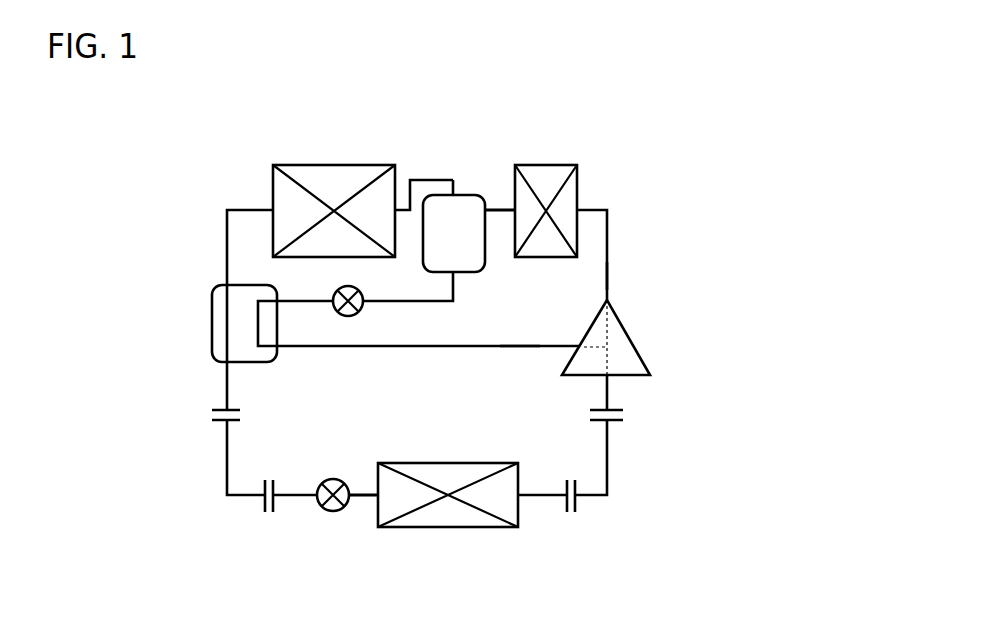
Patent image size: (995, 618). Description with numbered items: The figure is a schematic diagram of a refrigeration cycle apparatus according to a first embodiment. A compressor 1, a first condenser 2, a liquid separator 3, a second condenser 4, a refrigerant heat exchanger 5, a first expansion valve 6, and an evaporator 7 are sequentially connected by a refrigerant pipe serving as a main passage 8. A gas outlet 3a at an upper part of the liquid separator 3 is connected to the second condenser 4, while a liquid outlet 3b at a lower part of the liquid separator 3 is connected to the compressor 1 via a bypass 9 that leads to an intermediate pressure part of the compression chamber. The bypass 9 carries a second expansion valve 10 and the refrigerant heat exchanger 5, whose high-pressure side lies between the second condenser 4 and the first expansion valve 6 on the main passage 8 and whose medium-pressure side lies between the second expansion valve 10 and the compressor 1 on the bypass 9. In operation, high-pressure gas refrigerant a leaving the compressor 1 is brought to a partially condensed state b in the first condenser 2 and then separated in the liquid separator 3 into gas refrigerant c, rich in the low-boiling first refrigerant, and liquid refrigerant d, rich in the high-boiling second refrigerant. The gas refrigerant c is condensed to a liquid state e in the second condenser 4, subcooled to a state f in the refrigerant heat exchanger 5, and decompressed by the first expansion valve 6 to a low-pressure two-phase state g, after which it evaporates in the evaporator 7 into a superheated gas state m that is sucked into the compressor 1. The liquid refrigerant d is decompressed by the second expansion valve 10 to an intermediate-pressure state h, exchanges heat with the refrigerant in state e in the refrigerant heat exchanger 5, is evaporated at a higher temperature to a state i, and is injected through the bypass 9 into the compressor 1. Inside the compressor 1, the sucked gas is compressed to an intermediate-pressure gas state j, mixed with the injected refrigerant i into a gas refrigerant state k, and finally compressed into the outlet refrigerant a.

The compressor 1 is at (645, 377).
The first condenser 2 is at (545, 165).
The liquid separator 3 is at (487, 268).
The gas outlet 3a is at (462, 195).
The liquid outlet 3b is at (457, 282).
The second condenser 4 is at (330, 165).
The refrigerant heat exchanger 5 is at (212, 324).
The first expansion valve 6 is at (335, 511).
The evaporator 7 is at (445, 527).
The main passage 8 is at (607, 240).
The bypass 9 is at (555, 346).
The second expansion valve 10 is at (359, 291).
The gas refrigerant a is at (607, 275).
The partially condensed state b is at (496, 210).
The gas refrigerant c is at (420, 180).
The liquid refrigerant d is at (452, 302).
The liquid state e is at (227, 228).
The subcooled state f is at (227, 463).
The low-pressure two-phase state g is at (359, 495).
The intermediate pressure state h is at (316, 301).
The evaporated state i is at (523, 347).
The intermediate-pressure gas state j is at (608, 359).
The mixed gas refrigerant state k is at (610, 345).
The superheated gas state m is at (609, 467).